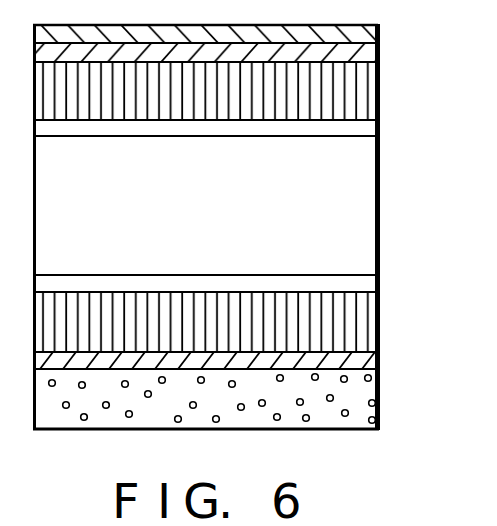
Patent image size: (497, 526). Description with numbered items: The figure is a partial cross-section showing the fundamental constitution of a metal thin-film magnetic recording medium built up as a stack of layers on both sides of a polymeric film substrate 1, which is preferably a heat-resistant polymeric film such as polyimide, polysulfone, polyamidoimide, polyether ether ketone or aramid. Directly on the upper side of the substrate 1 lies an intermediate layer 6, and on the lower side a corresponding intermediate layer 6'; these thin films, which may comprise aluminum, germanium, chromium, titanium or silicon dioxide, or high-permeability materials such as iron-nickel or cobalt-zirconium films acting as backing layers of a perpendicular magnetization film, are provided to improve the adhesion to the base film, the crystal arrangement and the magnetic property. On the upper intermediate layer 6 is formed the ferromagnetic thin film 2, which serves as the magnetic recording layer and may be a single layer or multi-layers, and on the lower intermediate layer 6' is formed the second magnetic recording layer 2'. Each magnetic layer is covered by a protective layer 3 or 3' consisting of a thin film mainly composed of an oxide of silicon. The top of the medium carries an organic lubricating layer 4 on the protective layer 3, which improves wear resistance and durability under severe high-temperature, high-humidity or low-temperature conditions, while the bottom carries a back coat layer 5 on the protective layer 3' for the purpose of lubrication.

The substrate 1 is at (367, 197).
The ferromagnetic thin film 2 is at (244, 91).
The protective layer 3 is at (244, 59).
The organic lubricating layer 4 is at (380, 33).
The back coat layer 5 is at (373, 403).
The intermediate layer 6 is at (244, 133).
The intermediate layer 6' is at (249, 278).
The magnetic recording layer 2' is at (249, 322).
The protective layer 3' is at (249, 359).